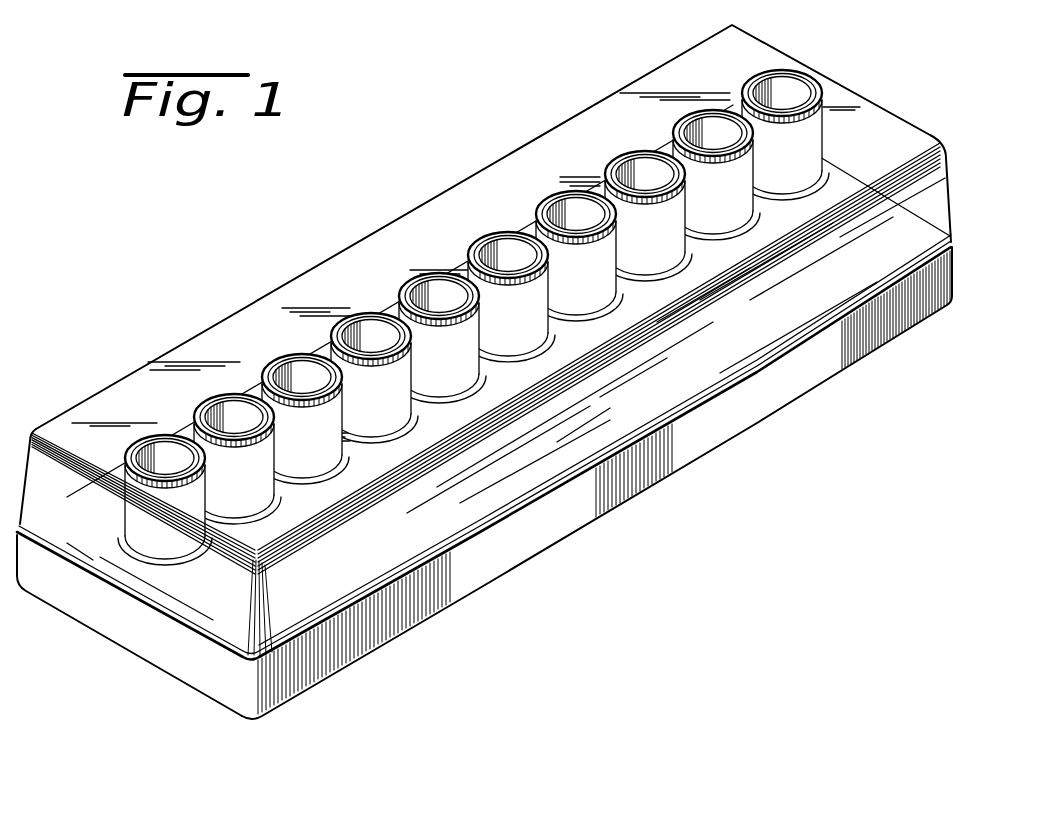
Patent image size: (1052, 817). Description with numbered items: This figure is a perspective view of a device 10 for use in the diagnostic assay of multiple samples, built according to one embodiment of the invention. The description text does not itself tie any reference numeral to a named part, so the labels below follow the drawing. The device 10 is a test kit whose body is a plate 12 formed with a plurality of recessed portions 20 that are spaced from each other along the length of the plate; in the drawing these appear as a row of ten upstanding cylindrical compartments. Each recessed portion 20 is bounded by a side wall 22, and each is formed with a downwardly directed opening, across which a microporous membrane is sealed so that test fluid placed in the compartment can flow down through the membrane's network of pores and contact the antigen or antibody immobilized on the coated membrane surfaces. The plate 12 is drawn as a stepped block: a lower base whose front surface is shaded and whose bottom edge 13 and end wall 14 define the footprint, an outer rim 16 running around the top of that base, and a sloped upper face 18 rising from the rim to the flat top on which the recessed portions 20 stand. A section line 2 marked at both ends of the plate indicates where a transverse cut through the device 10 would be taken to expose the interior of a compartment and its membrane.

The section line 2- 2 is at (900, 63).
The socket holder 10 is at (285, 258).
The base side wall 12 is at (677, 459).
The bottom edge of base 13 is at (490, 586).
The end wall of base 14 is at (122, 622).
The rim of base 16 is at (347, 609).
The upper body sloped face 18 is at (288, 594).
The socket posts 20 is at (633, 150).
The post base flanges 22 is at (233, 524).